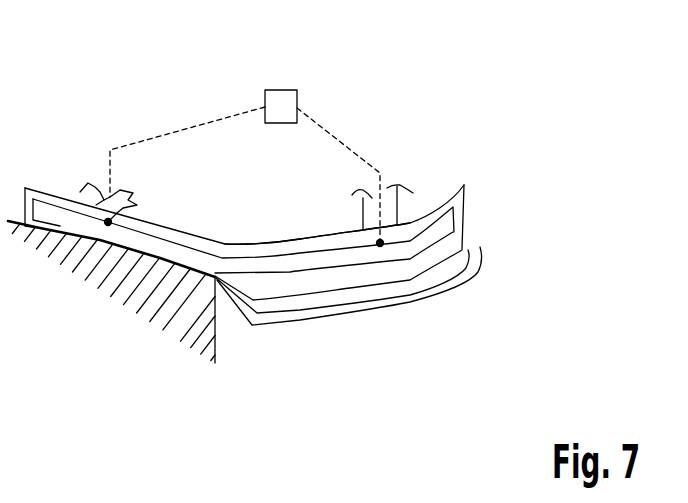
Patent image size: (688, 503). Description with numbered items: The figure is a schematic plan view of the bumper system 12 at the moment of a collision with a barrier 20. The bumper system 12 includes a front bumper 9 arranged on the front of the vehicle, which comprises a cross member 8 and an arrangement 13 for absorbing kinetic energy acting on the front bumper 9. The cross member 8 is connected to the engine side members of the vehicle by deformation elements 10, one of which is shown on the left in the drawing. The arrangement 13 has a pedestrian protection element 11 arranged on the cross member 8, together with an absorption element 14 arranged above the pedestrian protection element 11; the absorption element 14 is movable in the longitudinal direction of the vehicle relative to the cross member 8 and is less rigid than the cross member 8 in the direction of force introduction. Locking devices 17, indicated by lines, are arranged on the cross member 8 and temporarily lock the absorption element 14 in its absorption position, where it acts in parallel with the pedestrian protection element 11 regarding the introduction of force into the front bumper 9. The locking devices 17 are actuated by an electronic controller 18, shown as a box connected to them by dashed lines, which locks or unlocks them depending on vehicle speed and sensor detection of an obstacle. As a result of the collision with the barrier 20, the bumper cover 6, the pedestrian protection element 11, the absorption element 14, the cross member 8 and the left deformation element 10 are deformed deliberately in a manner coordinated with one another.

The bumper cover 6 is at (452, 284).
The cross member 8 is at (240, 242).
The front bumper 9 is at (320, 227).
The deformation element 10 is at (104, 195).
The pedestrian protection element 11 is at (347, 304).
The bumper system 12 is at (518, 152).
The arrangement for absorbing kinetic energy 13 is at (182, 226).
The absorption element 14 is at (465, 242).
The locking device 17 is at (108, 222).
The electronic controller 18 is at (282, 90).
The barrier 20 is at (216, 350).